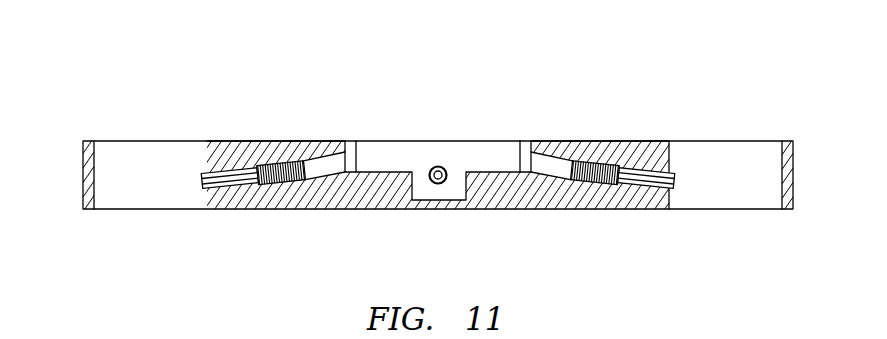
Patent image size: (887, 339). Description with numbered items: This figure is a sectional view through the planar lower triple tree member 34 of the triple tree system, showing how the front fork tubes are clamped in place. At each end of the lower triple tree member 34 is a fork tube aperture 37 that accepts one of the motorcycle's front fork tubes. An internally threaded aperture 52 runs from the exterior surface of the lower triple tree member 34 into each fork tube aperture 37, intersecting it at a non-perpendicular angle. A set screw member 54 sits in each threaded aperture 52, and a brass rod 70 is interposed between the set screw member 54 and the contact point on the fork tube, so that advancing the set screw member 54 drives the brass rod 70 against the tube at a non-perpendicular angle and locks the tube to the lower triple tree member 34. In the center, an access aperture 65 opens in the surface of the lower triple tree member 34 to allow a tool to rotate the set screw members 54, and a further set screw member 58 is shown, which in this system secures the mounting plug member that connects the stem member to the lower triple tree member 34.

The lower triple tree member 34 is at (462, 212).
The fork tube aperture 37 is at (436, 142).
The threaded aperture 52 is at (440, 104).
The set screw member 54 is at (438, 125).
The set screw member 58 is at (482, 124).
The access aperture 65 is at (421, 117).
The brass rod 70 is at (438, 143).